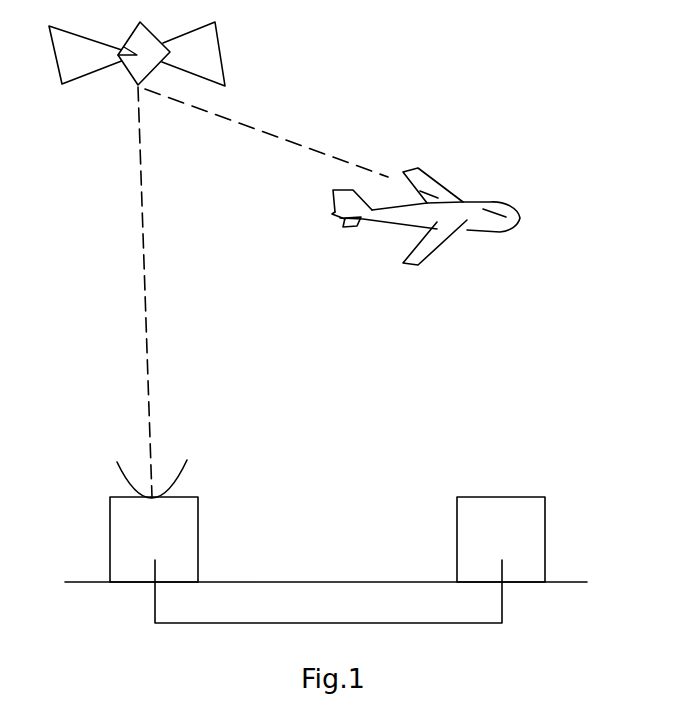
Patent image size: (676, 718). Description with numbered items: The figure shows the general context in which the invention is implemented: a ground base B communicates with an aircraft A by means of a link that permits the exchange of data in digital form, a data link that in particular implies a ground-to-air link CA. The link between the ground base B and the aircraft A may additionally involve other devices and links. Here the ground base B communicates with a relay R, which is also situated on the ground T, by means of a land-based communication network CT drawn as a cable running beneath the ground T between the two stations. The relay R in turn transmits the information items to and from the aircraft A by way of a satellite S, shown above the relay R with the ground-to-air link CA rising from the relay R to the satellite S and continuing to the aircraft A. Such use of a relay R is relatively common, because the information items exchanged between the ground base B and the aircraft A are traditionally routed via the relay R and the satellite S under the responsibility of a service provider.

The satellite S is at (89, 86).
The ground-to-air link CA is at (150, 262).
The aircraft A is at (478, 242).
The relay R is at (205, 485).
The ground base B is at (452, 492).
The ground T is at (572, 578).
The land-based communication network CT is at (240, 628).